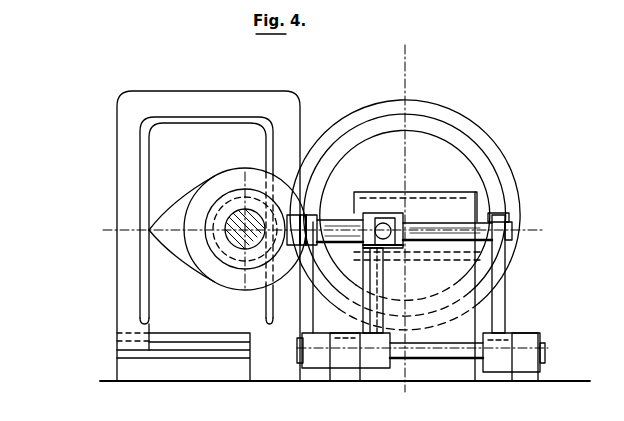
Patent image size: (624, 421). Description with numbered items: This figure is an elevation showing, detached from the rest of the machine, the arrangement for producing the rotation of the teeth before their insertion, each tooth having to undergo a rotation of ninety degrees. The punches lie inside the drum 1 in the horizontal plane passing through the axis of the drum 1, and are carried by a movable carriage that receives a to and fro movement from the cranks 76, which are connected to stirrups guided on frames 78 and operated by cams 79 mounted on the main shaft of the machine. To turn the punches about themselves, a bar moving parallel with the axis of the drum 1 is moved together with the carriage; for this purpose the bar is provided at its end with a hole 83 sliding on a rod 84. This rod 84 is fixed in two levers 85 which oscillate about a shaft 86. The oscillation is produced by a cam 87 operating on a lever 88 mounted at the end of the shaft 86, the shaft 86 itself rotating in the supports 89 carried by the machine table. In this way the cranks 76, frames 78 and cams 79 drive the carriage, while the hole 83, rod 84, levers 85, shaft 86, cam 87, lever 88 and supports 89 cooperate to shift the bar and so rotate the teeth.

The drum 1 is at (490, 144).
The crank 76 is at (333, 216).
The frame 78 is at (192, 345).
The cam 79 is at (170, 207).
The hole 83 is at (393, 213).
The rod 84 is at (470, 197).
The lever 85 is at (378, 284).
The shaft 86 is at (429, 351).
The cam 87 is at (233, 176).
The lever 88 is at (303, 322).
The support 89 is at (339, 378).